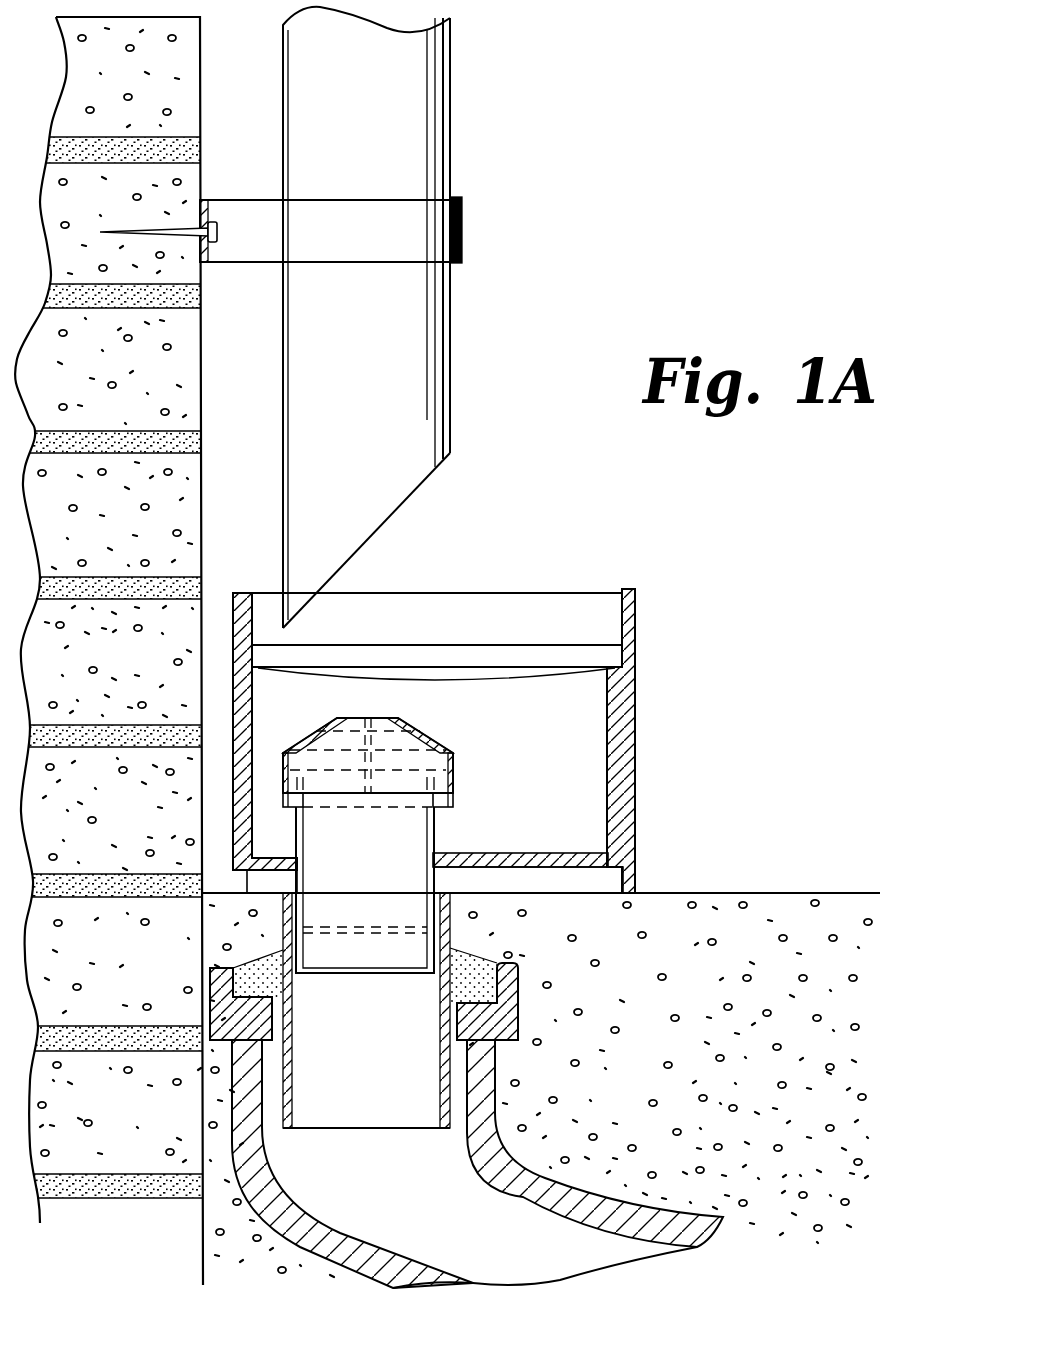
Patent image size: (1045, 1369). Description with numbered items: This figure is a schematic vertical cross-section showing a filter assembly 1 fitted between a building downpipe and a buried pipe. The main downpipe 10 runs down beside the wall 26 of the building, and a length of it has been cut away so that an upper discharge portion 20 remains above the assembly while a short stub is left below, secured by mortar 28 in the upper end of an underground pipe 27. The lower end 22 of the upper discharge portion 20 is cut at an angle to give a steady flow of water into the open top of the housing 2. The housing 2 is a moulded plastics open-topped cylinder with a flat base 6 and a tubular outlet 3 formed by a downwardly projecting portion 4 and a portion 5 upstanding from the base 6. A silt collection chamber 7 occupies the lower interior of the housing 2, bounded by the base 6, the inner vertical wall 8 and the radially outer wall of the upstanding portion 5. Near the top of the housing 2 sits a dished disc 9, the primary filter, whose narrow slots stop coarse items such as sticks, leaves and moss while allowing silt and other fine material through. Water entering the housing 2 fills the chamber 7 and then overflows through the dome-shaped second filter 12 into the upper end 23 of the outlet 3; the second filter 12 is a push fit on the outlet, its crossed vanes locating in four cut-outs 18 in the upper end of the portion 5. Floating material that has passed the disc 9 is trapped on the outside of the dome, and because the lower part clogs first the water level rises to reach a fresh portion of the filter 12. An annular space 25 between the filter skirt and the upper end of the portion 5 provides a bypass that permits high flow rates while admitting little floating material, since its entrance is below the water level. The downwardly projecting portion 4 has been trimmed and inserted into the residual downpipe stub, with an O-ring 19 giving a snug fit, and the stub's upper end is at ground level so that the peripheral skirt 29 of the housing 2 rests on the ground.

The filter assembly 1 is at (700, 713).
The housing 2 is at (633, 800).
The tubular outlet 3 is at (283, 884).
The downwardly projecting portion 4 is at (433, 873).
The upstanding outlet portion 5 is at (437, 838).
The base 6 is at (577, 864).
The silt collection chamber 7 is at (560, 838).
The inner vertical wall 8 is at (617, 795).
The dished disc 9 is at (537, 652).
The downpipe 10 is at (453, 363).
The second filter 12 is at (462, 746).
The cut-outs 18 is at (303, 797).
The O-ring 19 is at (347, 935).
The upper discharge portion 20 is at (450, 310).
The lower end 22 is at (412, 498).
The upper end 23 is at (400, 762).
The annular space 25 is at (442, 807).
The wall 26 is at (199, 390).
The underground pipe 27 is at (527, 1160).
The mortar 28 is at (498, 977).
The peripheral skirt 29 is at (625, 882).